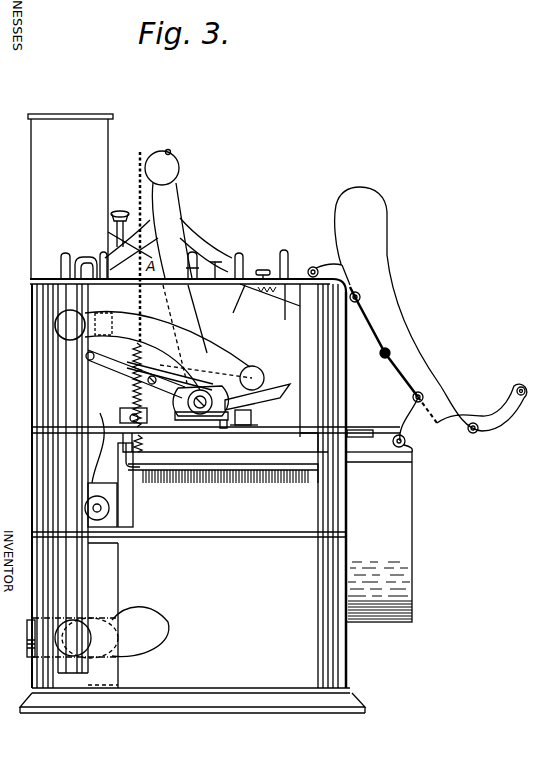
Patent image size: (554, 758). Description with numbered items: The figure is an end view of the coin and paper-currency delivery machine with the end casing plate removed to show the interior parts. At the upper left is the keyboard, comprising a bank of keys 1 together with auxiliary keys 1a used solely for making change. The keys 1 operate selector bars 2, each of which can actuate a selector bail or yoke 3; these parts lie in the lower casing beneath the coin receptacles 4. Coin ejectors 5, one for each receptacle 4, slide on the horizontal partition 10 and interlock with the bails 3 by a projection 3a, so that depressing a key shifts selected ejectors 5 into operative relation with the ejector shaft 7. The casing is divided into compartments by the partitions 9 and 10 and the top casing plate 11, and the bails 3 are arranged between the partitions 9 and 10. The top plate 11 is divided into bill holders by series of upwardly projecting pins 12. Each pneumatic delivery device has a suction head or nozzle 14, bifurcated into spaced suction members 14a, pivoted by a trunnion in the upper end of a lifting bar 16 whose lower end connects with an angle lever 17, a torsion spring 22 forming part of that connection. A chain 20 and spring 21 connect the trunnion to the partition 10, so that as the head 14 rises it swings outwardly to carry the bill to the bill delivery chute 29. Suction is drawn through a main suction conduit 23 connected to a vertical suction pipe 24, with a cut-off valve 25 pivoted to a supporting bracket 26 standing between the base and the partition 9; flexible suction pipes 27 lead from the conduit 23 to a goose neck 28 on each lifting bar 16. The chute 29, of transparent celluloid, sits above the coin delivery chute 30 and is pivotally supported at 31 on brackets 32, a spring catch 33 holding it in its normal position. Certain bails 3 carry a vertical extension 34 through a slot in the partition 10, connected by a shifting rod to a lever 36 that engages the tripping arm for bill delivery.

The keys 1 is at (262, 269).
The auxiliary keys 1a is at (112, 214).
The selector bars 2 is at (226, 478).
The selector bail or yoke 3 is at (300, 458).
The projection 3a is at (143, 470).
The coin receptacles 4 is at (330, 336).
The coin ejectors 5 is at (250, 425).
The ejector shaft 7 is at (110, 501).
The horizontal partition 9 is at (262, 528).
The horizontal partition 10 is at (275, 423).
The top casing plate 11 is at (210, 232).
The pins 12 is at (70, 255).
The suction head or nozzle 14 is at (161, 207).
The spaced suction members 14a is at (236, 257).
The lifting bar 16 is at (188, 315).
The angle lever 17 is at (110, 368).
The chain 20 is at (139, 192).
The spring 21 is at (170, 371).
The torsion spring 22 is at (186, 422).
The main suction conduit 23 is at (83, 325).
The vertical suction pipe 24 is at (62, 465).
The cut-off valve 25 is at (157, 628).
The supporting bracket 26 is at (110, 580).
The flexible suction pipes 27 is at (207, 358).
The goose neck 28 is at (230, 425).
The bill delivery chute 29 is at (392, 332).
The coin delivery chute 30 is at (395, 545).
The pivot 31 is at (406, 444).
The brackets 32 is at (358, 440).
The spring catch 33 is at (324, 262).
The vertical extension 34 is at (144, 418).
The lever 36 is at (100, 418).